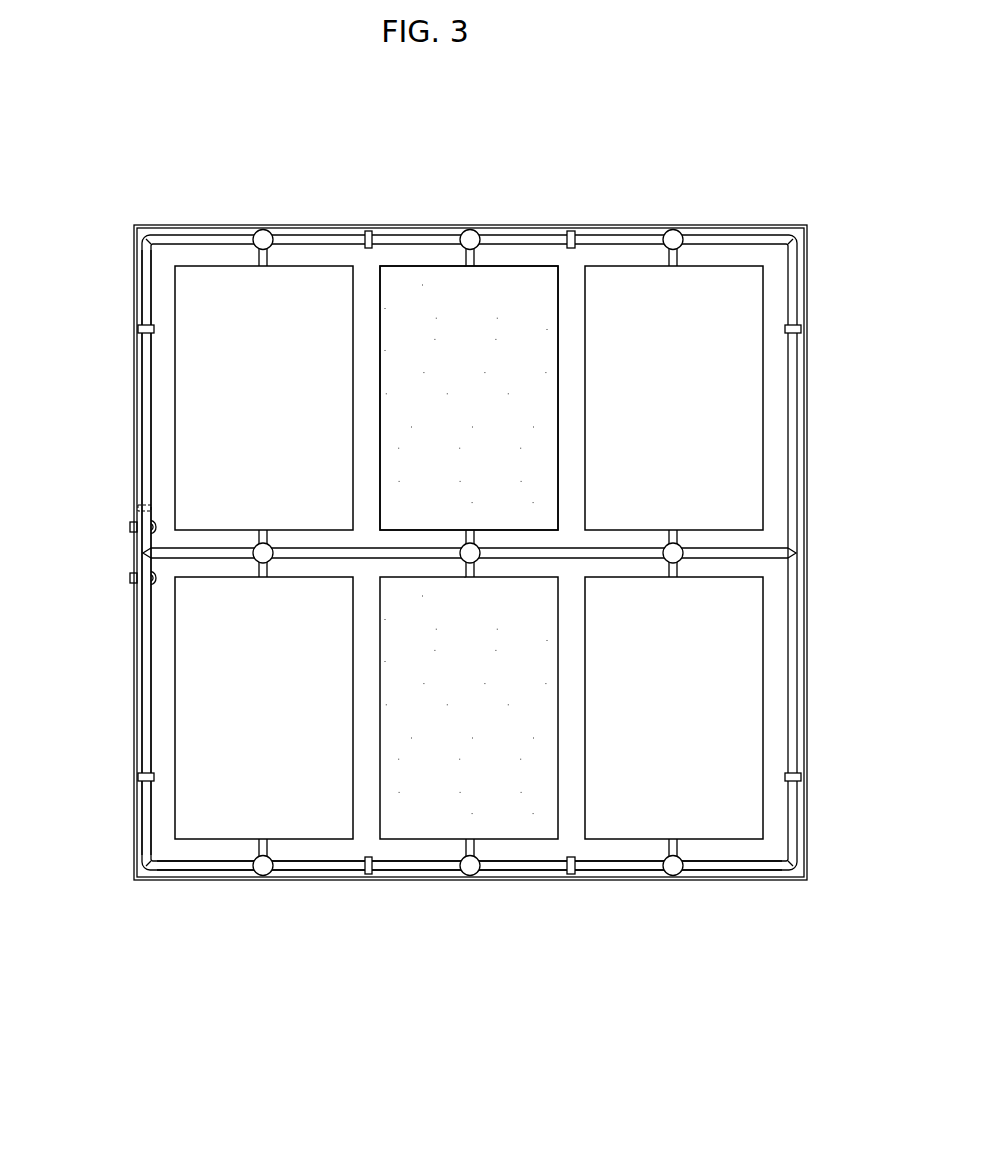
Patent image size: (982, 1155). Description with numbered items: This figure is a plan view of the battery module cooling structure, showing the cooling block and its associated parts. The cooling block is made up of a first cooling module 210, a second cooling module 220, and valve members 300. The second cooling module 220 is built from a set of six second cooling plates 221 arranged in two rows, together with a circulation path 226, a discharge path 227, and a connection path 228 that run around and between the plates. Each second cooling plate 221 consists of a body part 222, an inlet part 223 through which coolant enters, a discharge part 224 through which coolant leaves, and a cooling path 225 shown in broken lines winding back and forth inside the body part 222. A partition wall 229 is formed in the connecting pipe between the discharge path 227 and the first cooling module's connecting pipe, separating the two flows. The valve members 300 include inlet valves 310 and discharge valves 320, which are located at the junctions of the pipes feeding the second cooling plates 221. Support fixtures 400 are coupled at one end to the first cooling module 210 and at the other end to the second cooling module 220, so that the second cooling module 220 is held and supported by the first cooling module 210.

The first cooling module 210 is at (778, 883).
The second cooling module 220 is at (357, 995).
The second cooling plate 221 is at (555, 148).
The body part 222 is at (504, 265).
The inlet part 223 is at (468, 287).
The discharge part 224 is at (464, 530).
The cooling path 225 is at (542, 313).
The circulation path 226 is at (300, 870).
The discharge path 227 is at (410, 552).
The connection path 228 is at (147, 820).
The partition wall 229 is at (147, 505).
The valve member 300 is at (548, 1018).
The inlet valve 310 is at (470, 877).
The discharge valve 320 is at (668, 562).
The support fixture 400 is at (135, 327).